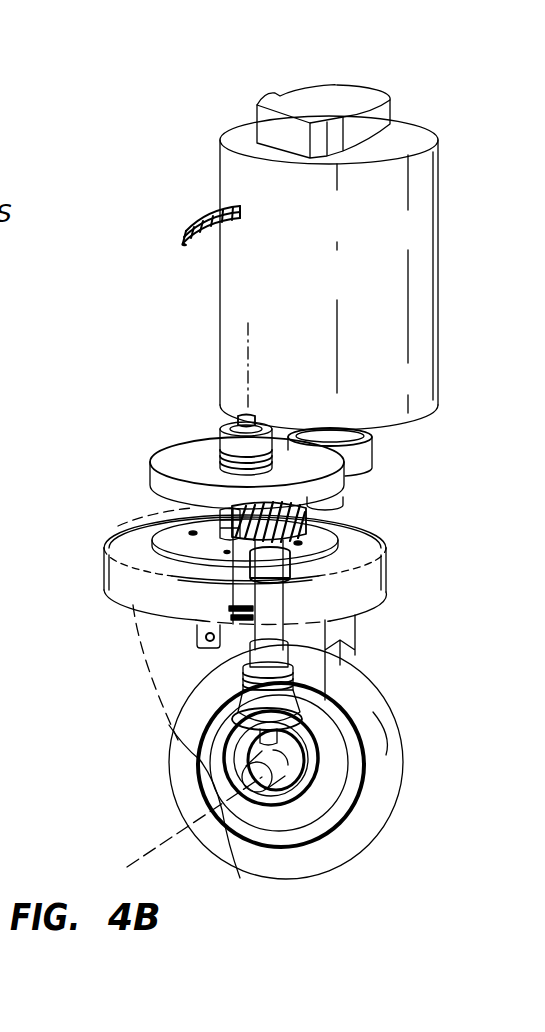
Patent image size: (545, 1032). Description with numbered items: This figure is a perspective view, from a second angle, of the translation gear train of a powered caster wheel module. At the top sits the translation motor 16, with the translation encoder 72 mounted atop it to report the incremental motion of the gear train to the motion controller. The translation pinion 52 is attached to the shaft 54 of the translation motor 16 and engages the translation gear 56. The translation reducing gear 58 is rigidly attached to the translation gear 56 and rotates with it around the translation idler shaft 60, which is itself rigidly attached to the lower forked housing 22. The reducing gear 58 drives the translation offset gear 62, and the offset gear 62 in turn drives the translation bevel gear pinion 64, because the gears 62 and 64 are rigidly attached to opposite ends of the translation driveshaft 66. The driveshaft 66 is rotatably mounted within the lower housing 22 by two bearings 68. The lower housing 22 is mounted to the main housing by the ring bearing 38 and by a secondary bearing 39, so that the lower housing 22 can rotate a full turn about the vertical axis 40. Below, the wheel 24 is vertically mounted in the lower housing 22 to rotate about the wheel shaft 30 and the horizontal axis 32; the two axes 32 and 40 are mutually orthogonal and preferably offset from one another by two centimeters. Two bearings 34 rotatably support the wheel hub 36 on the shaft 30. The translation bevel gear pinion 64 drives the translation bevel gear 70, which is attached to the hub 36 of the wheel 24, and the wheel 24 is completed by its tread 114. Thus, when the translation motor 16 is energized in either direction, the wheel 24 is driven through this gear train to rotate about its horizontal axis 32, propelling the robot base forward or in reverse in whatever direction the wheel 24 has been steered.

The translation motor 16 is at (428, 183).
The translation encoder 72 is at (288, 100).
The vertical axis 40 is at (262, 345).
The secondary bearing 39 is at (217, 443).
The translation gear 56 is at (165, 462).
The translation pinion 52 is at (365, 450).
The translation reducing gear 58 is at (175, 512).
The shaft 54 is at (350, 502).
The translation offset gear 62 is at (335, 524).
The translation idler shaft 60 is at (238, 590).
The translation driveshaft 66 is at (272, 600).
The ring bearing 38 is at (373, 585).
The lower forked housing 22 is at (135, 640).
The bearings 68 is at (240, 658).
The wheel hub 36 is at (347, 735).
The translation bevel gear pinion 64 is at (247, 727).
The tread 114 is at (395, 757).
The horizontal axis 32 is at (170, 842).
The wheel 24 is at (290, 785).
The wheel shaft 30 is at (233, 857).
The translation bevel gear 70 is at (278, 818).
The bearings 34 is at (320, 827).